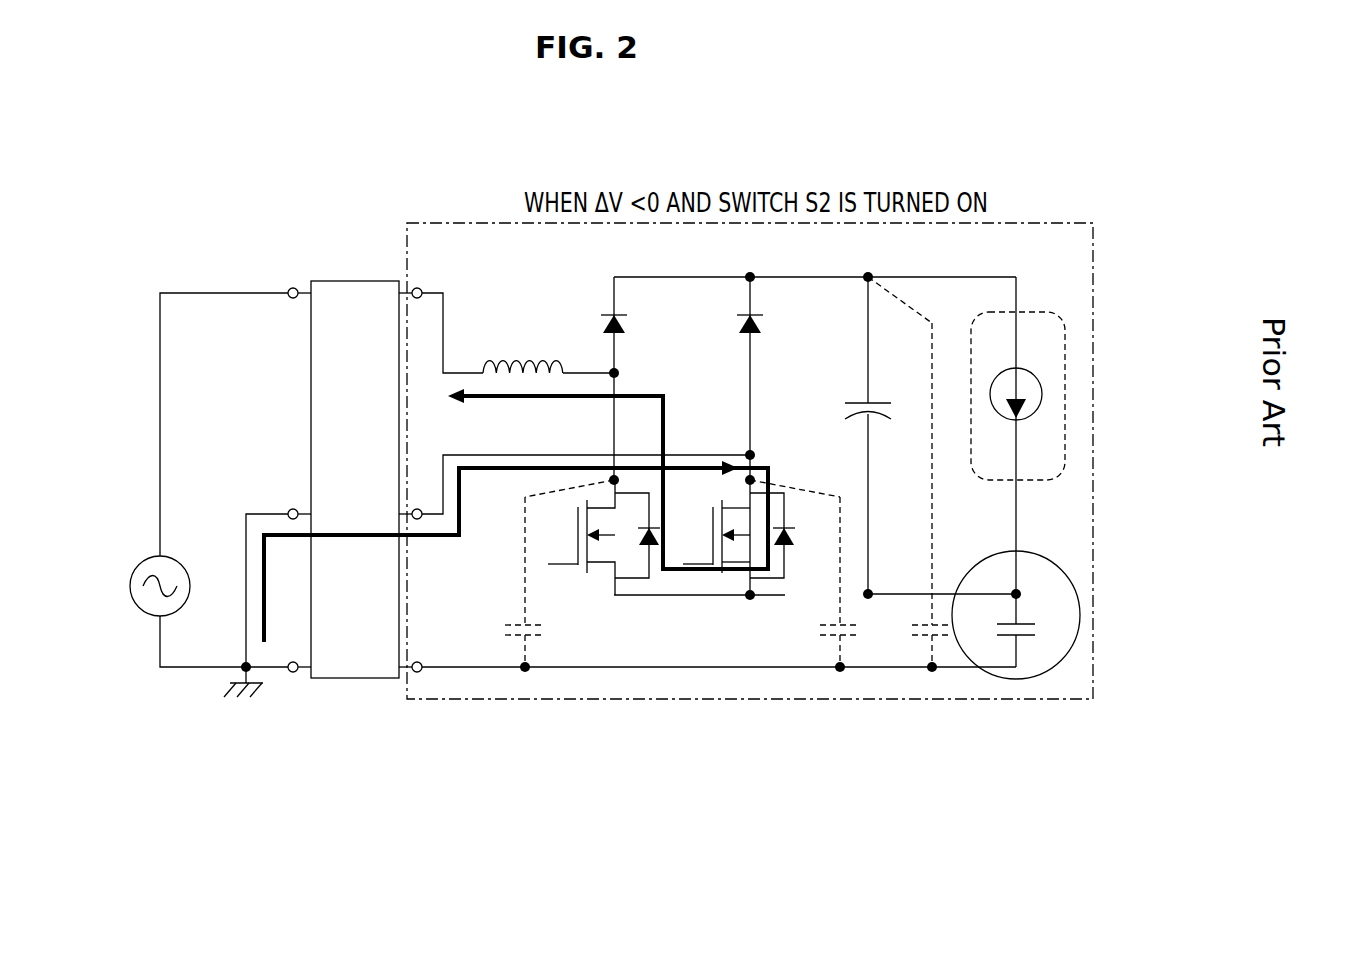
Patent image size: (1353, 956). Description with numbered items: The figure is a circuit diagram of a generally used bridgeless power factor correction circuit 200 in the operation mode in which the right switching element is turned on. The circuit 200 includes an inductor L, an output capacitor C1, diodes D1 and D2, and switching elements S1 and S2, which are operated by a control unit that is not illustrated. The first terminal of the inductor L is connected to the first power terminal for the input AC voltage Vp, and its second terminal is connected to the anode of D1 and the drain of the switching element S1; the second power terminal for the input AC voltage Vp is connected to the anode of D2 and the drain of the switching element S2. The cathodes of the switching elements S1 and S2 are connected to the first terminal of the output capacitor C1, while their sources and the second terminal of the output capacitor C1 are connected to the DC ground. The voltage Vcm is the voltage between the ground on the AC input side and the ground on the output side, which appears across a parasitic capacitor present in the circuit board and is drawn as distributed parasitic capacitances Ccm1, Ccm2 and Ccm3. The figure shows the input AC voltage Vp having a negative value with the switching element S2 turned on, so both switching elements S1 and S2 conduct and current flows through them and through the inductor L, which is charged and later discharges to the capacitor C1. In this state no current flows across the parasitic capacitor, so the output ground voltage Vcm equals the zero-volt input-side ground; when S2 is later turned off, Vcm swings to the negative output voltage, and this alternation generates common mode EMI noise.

The power factor correction circuit 200 is at (1072, 123).
The inductor L is at (523, 348).
The diode D1 is at (629, 378).
The diode D2 is at (765, 436).
The switching element S1 is at (600, 537).
The switching element S2 is at (756, 535).
The output capacitor C1 is at (852, 438).
The common-mode parasitic capacitance Ccm1 is at (559, 576).
The common-mode parasitic capacitance Ccm2 is at (805, 576).
The common-mode parasitic capacitance Ccm3 is at (910, 474).
The input AC voltage Vp is at (153, 572).
The voltage between the AC input ground and the output ground Vcm is at (1016, 615).